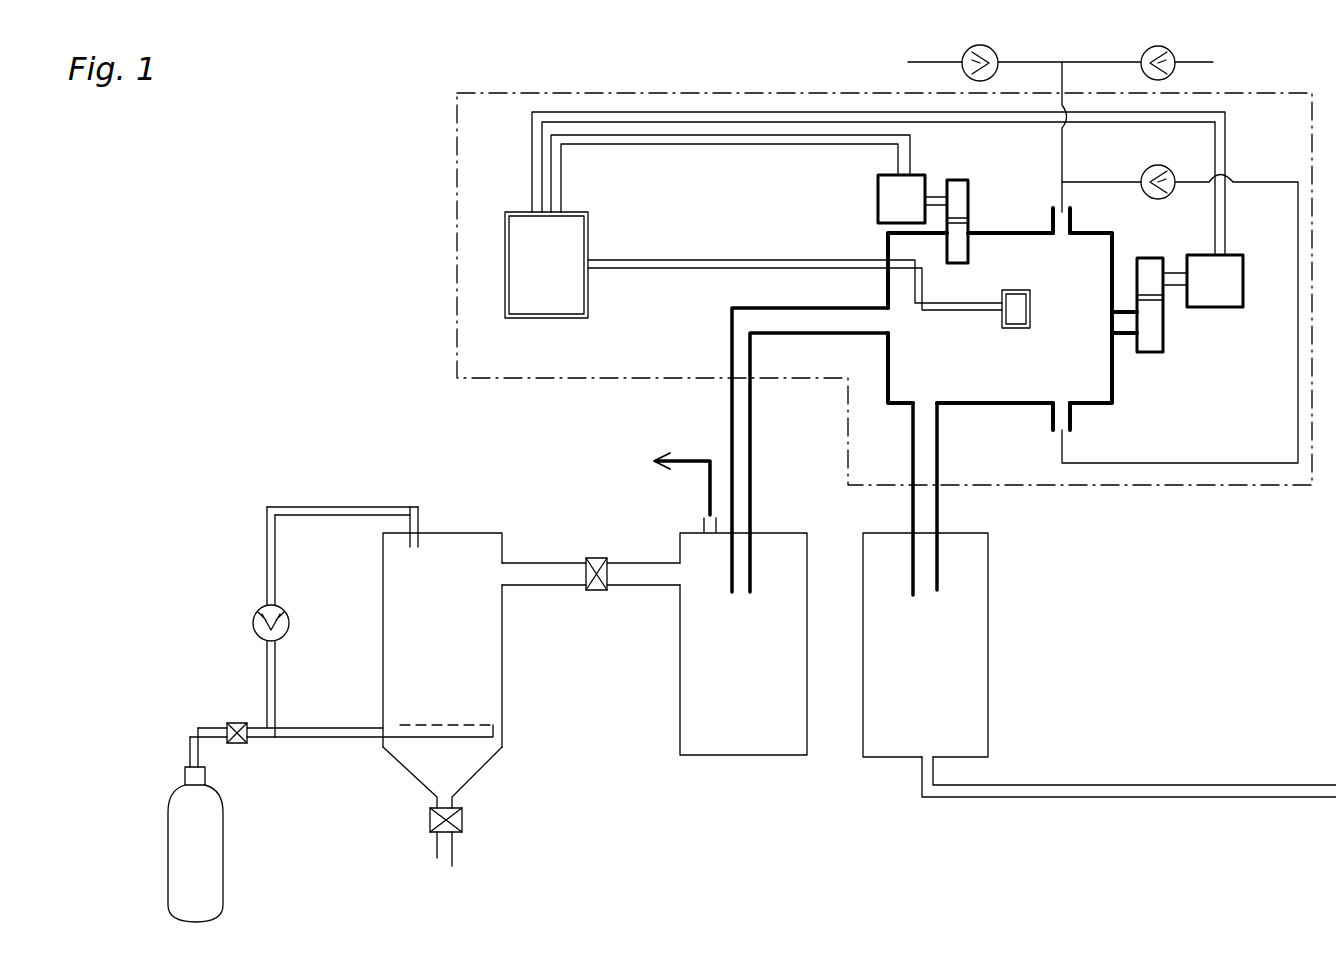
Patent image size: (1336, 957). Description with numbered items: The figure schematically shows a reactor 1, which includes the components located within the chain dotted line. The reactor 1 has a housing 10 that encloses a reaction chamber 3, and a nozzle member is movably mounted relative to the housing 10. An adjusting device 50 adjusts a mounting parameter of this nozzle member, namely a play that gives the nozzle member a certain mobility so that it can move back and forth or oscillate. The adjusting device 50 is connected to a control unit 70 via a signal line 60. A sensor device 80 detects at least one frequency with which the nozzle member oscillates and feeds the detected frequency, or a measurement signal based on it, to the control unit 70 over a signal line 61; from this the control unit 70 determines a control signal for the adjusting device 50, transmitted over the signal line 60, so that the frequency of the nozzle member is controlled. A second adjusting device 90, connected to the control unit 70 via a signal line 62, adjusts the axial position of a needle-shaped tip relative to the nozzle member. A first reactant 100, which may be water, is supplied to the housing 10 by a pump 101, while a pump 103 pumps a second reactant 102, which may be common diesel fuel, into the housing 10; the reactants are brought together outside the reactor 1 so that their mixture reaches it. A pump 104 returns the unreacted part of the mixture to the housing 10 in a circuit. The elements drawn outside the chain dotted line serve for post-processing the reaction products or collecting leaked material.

The reactor 1 is at (447, 353).
The reaction chamber 3 is at (1029, 319).
The housing 10 is at (1116, 403).
The adjusting device 50 is at (878, 197).
The signal line 60 is at (622, 148).
The signal line 61 is at (657, 270).
The signal line 62 is at (975, 126).
The control unit 70 is at (556, 281).
The sensor device 80 is at (1018, 329).
The second adjusting device 90 is at (1226, 308).
The first reactant 100 is at (899, 64).
The pump 101 is at (973, 48).
The second reactant 102 is at (1221, 65).
The pump 103 is at (1165, 42).
The pump 104 is at (1148, 179).